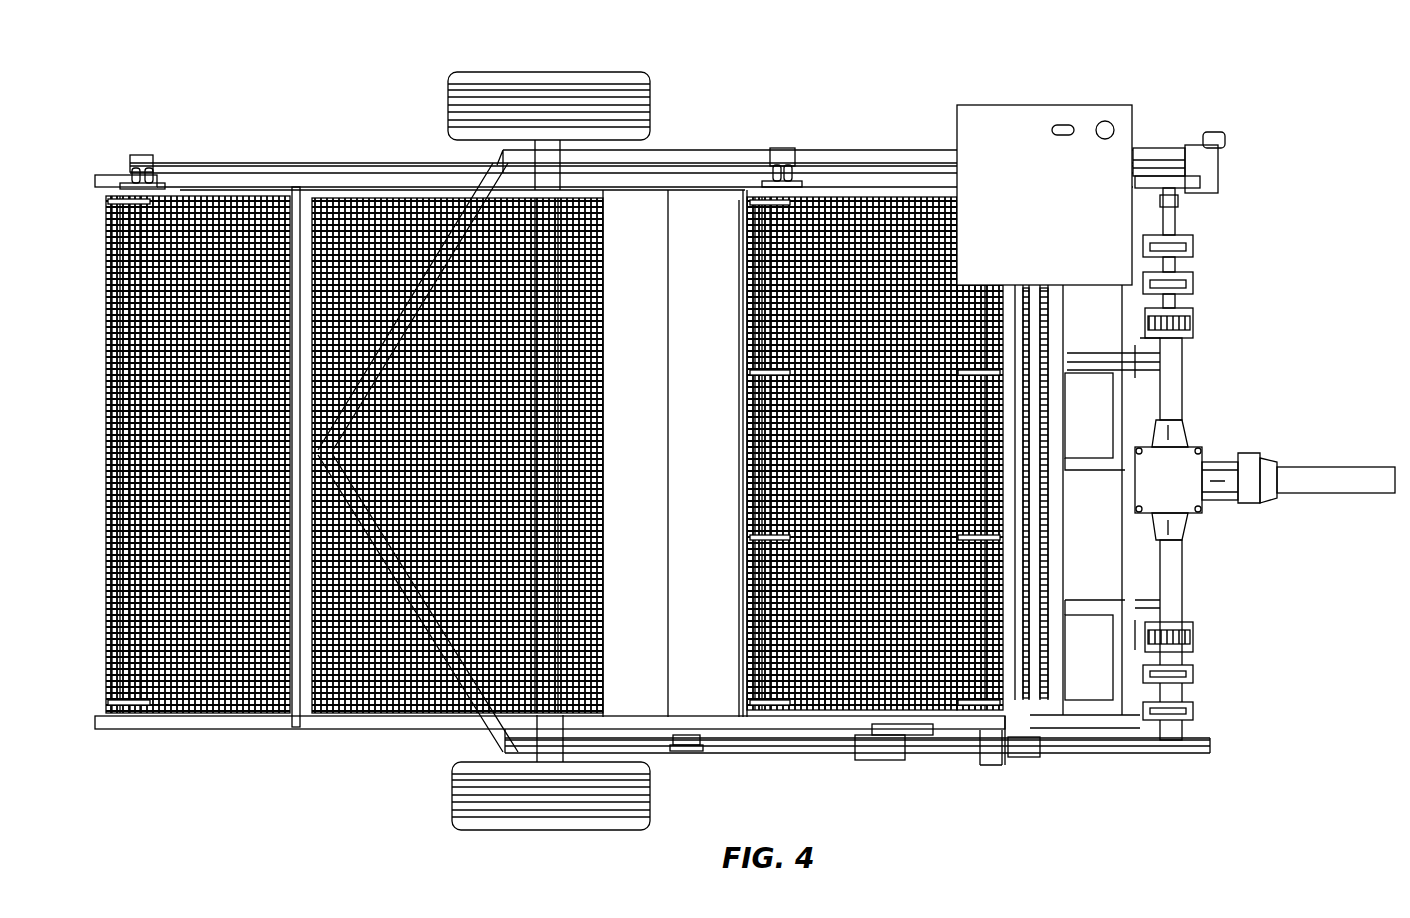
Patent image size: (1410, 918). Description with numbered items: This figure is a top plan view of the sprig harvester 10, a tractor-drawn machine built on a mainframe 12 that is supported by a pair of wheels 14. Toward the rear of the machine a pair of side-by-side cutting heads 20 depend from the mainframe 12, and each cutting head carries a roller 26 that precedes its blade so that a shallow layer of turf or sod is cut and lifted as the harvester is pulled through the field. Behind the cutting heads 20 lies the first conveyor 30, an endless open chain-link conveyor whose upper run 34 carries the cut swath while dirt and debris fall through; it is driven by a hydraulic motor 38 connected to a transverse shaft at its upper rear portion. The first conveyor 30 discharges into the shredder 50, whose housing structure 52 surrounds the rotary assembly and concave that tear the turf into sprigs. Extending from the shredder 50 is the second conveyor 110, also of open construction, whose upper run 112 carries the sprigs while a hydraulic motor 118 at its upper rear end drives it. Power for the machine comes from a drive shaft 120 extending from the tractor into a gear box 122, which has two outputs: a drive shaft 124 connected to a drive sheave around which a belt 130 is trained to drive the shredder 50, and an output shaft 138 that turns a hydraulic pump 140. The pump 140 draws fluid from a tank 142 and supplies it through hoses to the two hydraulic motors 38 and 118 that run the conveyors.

The sprig harvester 10 is at (833, 44).
The mainframe 12 is at (372, 730).
The wheels 14 is at (583, 78).
The cutting head 20 is at (1107, 712).
The roller 26 is at (1088, 690).
The first conveyor 30 is at (905, 684).
The upper run 34 is at (870, 212).
The hydraulic motor 38 is at (782, 150).
The shredder 50 is at (688, 215).
The housing structure 52 is at (700, 690).
The second conveyor 110 is at (228, 690).
The upper run 112 is at (230, 215).
The hydraulic motor 118 is at (150, 158).
The drive shaft 120 is at (1338, 478).
The gear box 122 is at (1172, 460).
The drive shaft 124 is at (1170, 582).
The belt 130 is at (800, 748).
The output shaft 138 is at (1172, 385).
The hydraulic pump 140 is at (1222, 172).
The tank 142 is at (1020, 118).